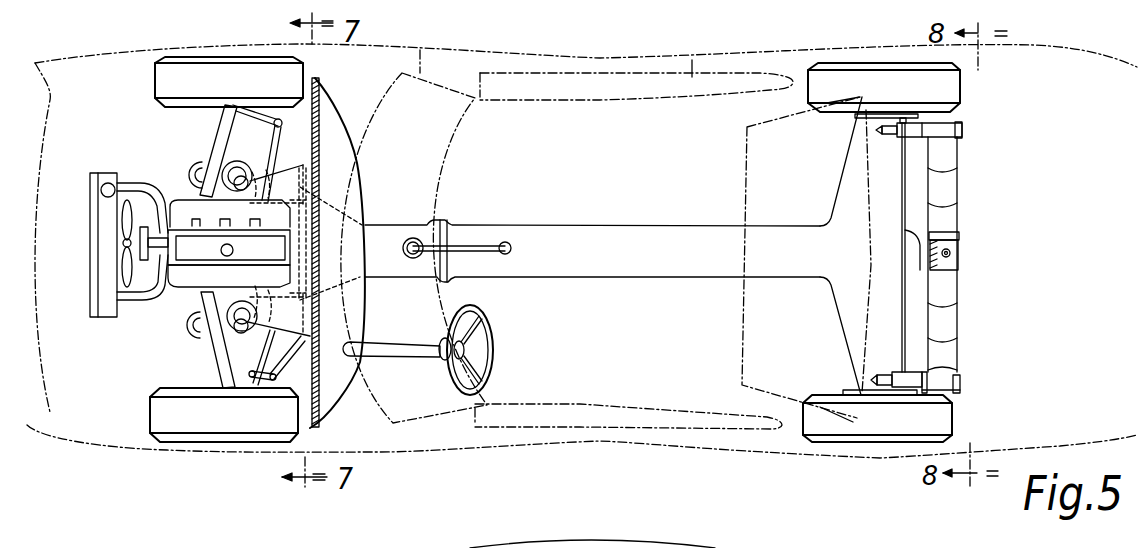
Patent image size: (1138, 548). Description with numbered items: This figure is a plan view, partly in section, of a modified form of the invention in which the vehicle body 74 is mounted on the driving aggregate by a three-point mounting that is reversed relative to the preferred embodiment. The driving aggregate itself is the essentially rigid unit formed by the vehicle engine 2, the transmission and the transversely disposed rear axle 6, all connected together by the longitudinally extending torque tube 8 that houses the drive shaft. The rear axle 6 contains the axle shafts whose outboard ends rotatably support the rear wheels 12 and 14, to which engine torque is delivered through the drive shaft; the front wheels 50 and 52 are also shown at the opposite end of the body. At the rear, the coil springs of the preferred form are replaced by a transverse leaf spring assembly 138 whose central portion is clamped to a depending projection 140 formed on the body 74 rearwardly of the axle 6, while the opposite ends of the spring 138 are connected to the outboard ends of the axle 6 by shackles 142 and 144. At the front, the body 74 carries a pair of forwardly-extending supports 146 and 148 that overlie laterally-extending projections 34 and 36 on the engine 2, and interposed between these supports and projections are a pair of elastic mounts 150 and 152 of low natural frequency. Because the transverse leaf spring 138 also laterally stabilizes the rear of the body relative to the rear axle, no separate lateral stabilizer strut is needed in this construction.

The vehicle engine 2 is at (190, 255).
The rear axle 6 is at (860, 325).
The torque tube 8 is at (636, 284).
The rear wheel 12 is at (971, 86).
The rear wheel 14 is at (965, 418).
The laterally-extending projection 34 is at (236, 184).
The laterally-extending projection 36 is at (236, 320).
The front wheel 50 is at (148, 91).
The front wheel 52 is at (140, 413).
The vehicle body 74 is at (700, 450).
The transverse leaf spring assembly 138 is at (966, 212).
The depending projection 140 is at (958, 267).
The shackle 142 is at (971, 136).
The shackle 144 is at (960, 384).
The forwardly-extending support 146 is at (222, 178).
The forwardly-extending support 148 is at (197, 330).
The elastic mount 150 is at (222, 192).
The elastic mount 152 is at (234, 325).